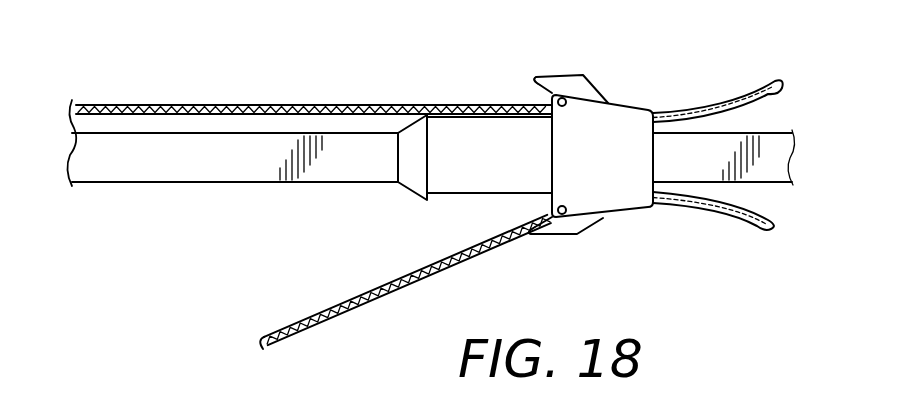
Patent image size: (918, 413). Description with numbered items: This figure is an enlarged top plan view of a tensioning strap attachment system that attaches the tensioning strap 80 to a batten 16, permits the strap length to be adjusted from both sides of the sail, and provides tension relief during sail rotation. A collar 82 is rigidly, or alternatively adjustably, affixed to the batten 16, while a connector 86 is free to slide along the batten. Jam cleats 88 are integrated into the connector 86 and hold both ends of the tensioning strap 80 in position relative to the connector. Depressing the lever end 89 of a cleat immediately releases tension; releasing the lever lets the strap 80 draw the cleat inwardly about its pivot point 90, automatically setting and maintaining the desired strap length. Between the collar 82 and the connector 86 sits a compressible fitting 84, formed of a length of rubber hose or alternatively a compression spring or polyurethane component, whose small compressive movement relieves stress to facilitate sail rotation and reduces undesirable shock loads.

The batten 16 is at (185, 168).
The tensioning strap 80 is at (340, 108).
The collar 82 is at (418, 180).
The compressible fitting 84 is at (473, 135).
The connector 86 is at (632, 120).
The jam cleat 88 is at (585, 80).
The lever end 89 is at (533, 78).
The pivot point 90 is at (565, 106).